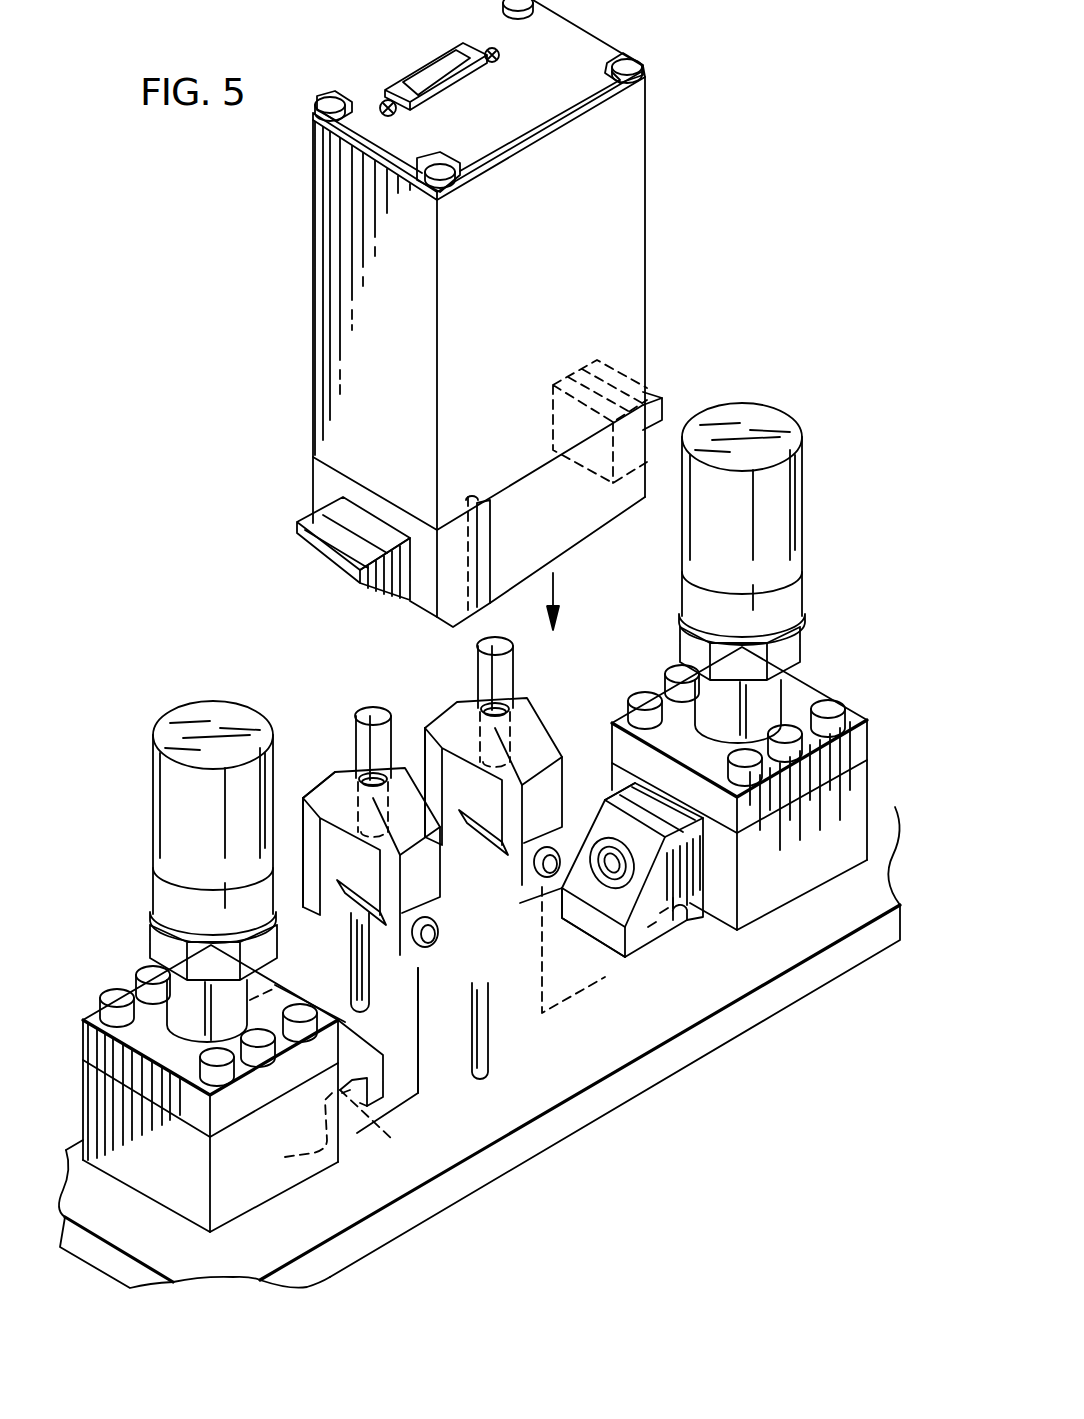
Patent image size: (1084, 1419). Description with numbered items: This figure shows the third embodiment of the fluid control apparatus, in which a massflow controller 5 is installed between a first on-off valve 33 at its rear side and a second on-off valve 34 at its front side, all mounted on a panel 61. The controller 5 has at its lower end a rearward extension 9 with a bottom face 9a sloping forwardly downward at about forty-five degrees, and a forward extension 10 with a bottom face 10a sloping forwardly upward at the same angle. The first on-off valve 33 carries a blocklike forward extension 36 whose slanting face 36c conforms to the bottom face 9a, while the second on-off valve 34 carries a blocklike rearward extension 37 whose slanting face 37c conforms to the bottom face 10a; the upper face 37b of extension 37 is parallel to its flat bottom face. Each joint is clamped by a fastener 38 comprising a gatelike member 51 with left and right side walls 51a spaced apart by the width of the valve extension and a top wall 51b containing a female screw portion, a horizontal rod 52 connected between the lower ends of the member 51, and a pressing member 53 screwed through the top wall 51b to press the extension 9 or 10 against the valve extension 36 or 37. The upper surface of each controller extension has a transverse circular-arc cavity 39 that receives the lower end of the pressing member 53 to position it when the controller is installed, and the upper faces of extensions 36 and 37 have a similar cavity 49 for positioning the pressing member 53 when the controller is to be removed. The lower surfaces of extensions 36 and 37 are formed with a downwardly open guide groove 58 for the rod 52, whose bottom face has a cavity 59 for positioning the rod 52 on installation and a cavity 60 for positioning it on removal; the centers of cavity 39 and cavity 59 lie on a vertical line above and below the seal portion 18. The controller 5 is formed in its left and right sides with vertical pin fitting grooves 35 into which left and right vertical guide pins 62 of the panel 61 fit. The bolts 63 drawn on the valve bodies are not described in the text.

The massflow controller 5 is at (497, 332).
The rearward extension 9 is at (305, 537).
The bottom face 9a is at (377, 588).
The forward extension 10 is at (654, 390).
The bottom face 10a is at (660, 430).
The seal portion 18 is at (605, 847).
The first on-off valve 33 is at (173, 807).
The second on-off valve 34 is at (788, 475).
The pin fitting groove 35 is at (443, 618).
The forward extension 36 is at (353, 1040).
The slanting face 36c is at (330, 1020).
The rearward extension 37 is at (636, 846).
The upper face 37b is at (607, 800).
The slanting face 37c is at (597, 903).
The fastener 38 is at (428, 796).
The cavity 39 is at (598, 375).
The cavity 49 is at (471, 847).
The gatelike member 51 is at (307, 817).
The side walls 51a is at (428, 907).
The top wall 51b is at (352, 770).
The horizontal rod 52 is at (370, 897).
The pressing member 53 is at (383, 713).
The guide groove 58 is at (660, 913).
The cavity 59 is at (648, 927).
The cavity 60 is at (737, 893).
The panel 61 is at (556, 1125).
The guide pins 62 is at (368, 960).
The bolt 63 is at (830, 703).